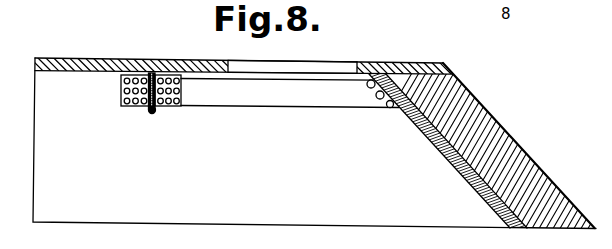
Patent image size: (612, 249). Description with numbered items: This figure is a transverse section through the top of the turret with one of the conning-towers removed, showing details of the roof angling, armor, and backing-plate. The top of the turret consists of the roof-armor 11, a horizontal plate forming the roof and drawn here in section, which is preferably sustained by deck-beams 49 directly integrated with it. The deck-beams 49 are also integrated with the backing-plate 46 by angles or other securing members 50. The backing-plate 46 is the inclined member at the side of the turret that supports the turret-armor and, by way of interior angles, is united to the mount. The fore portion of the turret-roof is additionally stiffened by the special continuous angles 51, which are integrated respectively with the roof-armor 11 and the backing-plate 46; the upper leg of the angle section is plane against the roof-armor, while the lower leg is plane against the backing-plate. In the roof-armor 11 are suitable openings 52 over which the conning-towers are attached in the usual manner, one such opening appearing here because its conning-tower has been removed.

The roof-armor 11 is at (76, 72).
The backing-plate 46 is at (461, 170).
The deck-beams 49 is at (148, 114).
The securing members 50 is at (169, 107).
The continuous angles 51 is at (289, 108).
The openings 52 is at (297, 68).